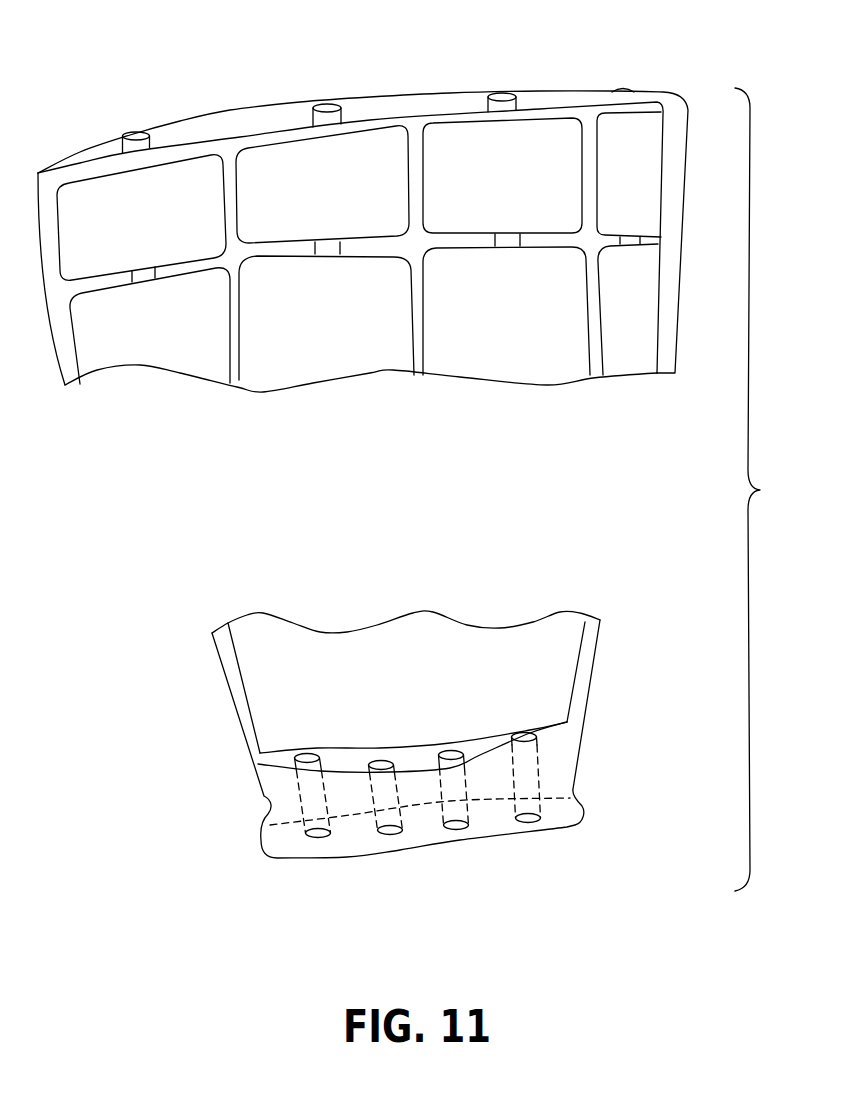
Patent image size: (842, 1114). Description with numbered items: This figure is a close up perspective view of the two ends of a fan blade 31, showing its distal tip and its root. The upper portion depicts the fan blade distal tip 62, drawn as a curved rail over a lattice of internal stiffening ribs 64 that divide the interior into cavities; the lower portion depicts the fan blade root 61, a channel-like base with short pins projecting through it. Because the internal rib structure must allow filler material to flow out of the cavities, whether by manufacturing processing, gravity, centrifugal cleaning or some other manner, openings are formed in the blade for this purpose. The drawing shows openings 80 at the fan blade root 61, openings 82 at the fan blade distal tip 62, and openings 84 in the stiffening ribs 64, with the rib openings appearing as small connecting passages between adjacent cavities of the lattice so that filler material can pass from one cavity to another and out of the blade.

The fan blade 31 is at (766, 489).
The fan blade root 61 is at (258, 838).
The fan blade distal tip 62 is at (255, 117).
The stiffening ribs 64 is at (110, 280).
The openings at the fan blade root 80 is at (325, 838).
The openings at the fan blade distal tip 82 is at (137, 136).
The openings in the stiffening ribs 84 is at (345, 233).